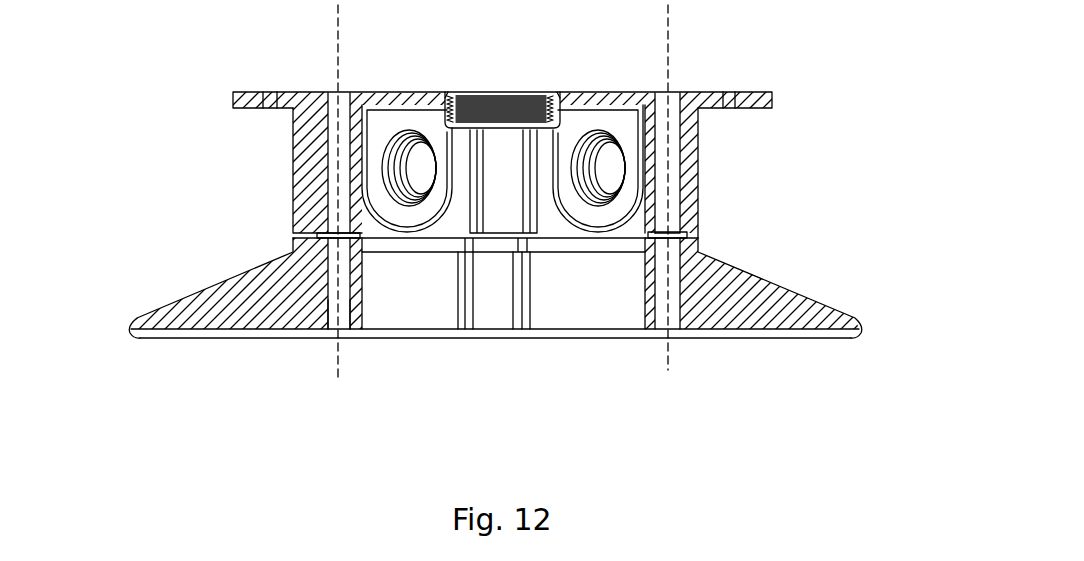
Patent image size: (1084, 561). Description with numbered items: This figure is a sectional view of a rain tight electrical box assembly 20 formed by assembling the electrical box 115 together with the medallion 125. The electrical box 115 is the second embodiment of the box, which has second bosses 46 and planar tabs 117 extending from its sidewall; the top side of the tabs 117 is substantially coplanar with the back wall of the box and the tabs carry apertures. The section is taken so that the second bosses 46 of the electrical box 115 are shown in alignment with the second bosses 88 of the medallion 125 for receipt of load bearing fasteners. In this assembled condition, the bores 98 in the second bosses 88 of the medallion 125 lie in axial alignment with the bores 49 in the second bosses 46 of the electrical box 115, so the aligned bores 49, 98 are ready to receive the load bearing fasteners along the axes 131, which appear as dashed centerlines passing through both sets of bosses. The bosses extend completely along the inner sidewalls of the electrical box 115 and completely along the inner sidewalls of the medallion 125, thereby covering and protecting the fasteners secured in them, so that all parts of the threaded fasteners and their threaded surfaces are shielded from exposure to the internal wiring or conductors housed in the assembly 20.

The liner assembly 20 is at (205, 231).
The second bosses 46 is at (358, 152).
The bores 49 is at (343, 106).
The second bosses 88 is at (358, 288).
The bores 98 is at (344, 325).
The electrical box 115 is at (698, 163).
The planar tabs 117 is at (761, 92).
The medallion 125 is at (750, 282).
The axes 131 is at (670, 367).